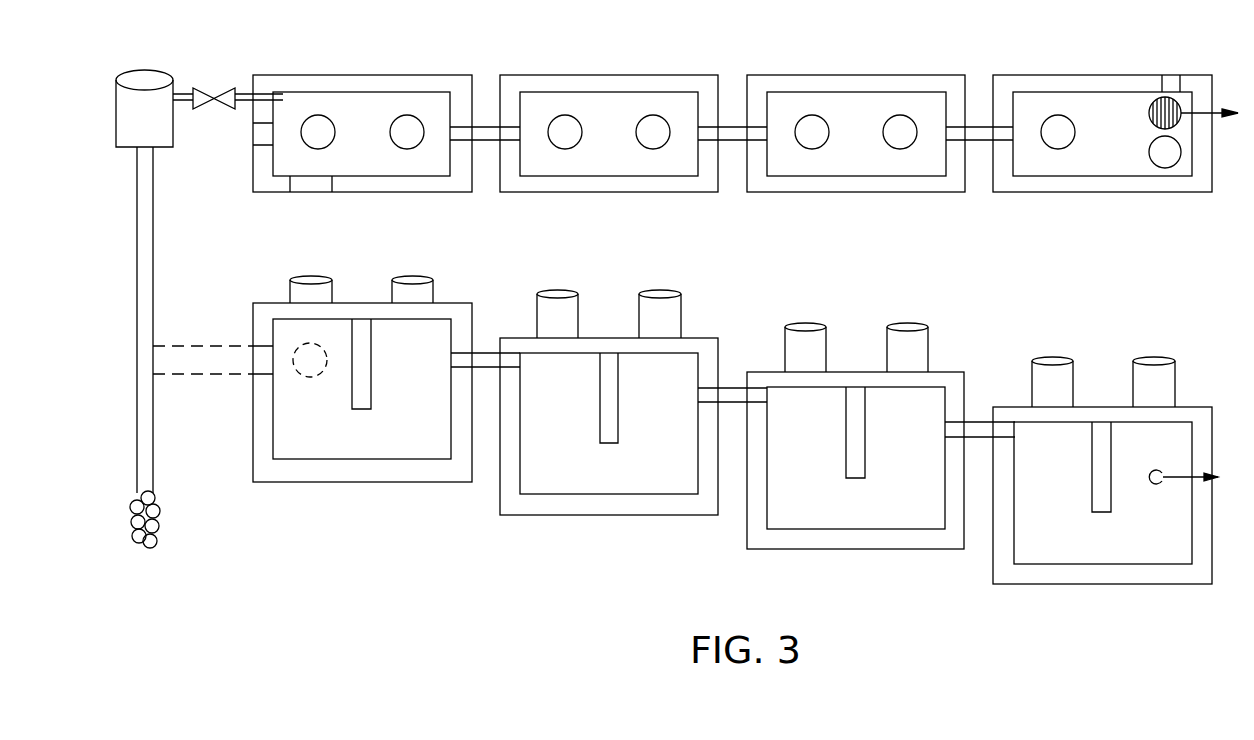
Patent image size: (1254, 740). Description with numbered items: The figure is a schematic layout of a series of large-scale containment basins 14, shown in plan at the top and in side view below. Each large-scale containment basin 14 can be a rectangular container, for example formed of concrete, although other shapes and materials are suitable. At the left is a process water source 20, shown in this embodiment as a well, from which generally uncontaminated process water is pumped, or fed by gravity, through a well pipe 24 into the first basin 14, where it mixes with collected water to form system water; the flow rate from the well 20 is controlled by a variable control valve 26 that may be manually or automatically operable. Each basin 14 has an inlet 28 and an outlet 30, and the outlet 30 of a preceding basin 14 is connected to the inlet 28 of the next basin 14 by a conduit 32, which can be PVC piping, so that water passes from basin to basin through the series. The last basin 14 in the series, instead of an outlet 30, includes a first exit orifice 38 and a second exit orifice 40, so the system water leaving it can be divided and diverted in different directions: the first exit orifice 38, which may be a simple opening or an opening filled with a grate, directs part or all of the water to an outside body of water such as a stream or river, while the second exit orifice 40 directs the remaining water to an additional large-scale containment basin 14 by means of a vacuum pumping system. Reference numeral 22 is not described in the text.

The large-scale containment basin 14 is at (622, 146).
The process water source 20 is at (160, 131).
The supply line 22 is at (182, 94).
The well pipe 24 is at (238, 94).
The variable control valve 26 is at (226, 108).
The inlet 28 is at (507, 127).
The outlet 30 is at (462, 127).
The conduit 32 is at (487, 141).
The first exit orifice 38 is at (1152, 108).
The second exit orifice 40 is at (1170, 80).